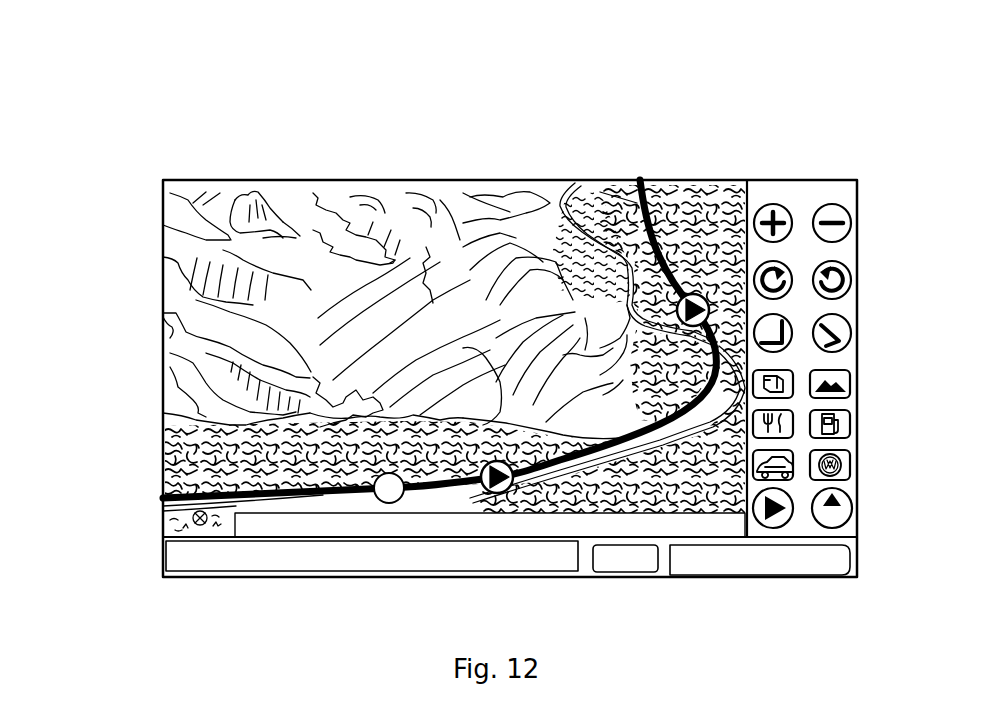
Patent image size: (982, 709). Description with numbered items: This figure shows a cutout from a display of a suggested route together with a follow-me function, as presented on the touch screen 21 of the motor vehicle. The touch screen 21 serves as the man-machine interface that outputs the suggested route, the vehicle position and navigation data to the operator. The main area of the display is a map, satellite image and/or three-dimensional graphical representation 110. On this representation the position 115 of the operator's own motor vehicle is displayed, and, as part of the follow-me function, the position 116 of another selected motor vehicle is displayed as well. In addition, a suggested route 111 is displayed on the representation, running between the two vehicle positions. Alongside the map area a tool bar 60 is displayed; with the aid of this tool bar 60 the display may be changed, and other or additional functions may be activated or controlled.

The touch screen 21 is at (138, 145).
The 3-D graphical representation 110 is at (333, 408).
The position of motor vehicle 2 115 is at (497, 472).
The suggested route 111 is at (643, 195).
The position of another selected motor vehicle 116 is at (697, 303).
The tool bar 60 is at (830, 445).